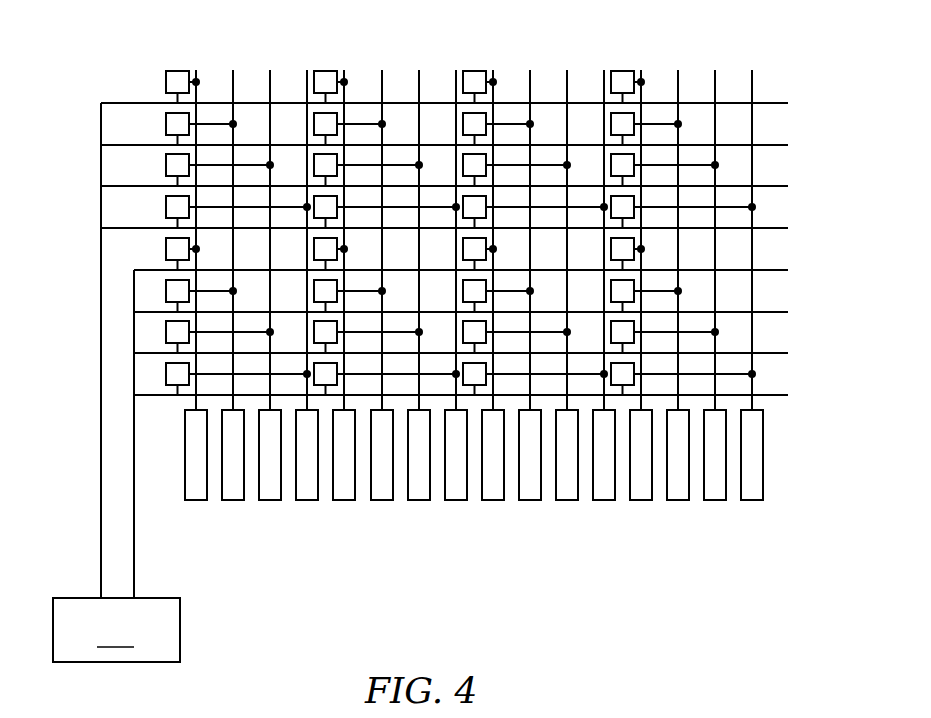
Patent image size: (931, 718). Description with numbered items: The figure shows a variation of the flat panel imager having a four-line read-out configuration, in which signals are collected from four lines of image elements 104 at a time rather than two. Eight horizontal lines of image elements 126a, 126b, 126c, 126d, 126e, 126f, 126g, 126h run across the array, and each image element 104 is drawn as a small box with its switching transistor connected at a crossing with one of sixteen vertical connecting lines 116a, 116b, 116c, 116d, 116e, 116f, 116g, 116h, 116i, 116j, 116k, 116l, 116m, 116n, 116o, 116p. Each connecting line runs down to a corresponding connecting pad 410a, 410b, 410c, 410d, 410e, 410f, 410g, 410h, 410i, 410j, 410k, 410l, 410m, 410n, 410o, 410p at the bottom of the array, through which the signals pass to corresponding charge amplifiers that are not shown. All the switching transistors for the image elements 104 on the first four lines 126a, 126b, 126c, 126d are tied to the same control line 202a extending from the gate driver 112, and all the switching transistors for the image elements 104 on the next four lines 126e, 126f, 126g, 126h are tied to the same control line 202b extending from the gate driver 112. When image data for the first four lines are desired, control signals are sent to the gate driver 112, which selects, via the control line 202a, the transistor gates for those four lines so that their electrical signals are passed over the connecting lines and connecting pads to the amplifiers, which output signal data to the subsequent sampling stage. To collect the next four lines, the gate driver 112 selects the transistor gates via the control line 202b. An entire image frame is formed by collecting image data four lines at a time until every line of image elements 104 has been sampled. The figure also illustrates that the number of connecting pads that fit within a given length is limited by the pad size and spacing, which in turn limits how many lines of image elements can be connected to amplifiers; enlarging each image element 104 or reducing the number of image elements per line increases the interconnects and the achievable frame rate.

The image element 104 is at (170, 72).
The gate driver 112 is at (116, 630).
The control line 202a is at (100, 448).
The control line 202b is at (134, 525).
The connecting line 116a is at (194, 206).
The connecting line 116b is at (342, 205).
The connecting line 116c is at (491, 206).
The connecting line 116d is at (639, 205).
The connecting line 116e is at (231, 206).
The connecting line 116f is at (380, 206).
The connecting line 116g is at (528, 205).
The connecting line 116h is at (676, 205).
The connecting line 116i is at (267, 208).
The connecting line 116j is at (416, 208).
The connecting line 116k is at (565, 206).
The connecting line 116l is at (712, 208).
The connecting line 116m is at (306, 202).
The connecting line 116n is at (454, 205).
The connecting line 116o is at (602, 206).
The connecting line 116p is at (750, 205).
The line of image elements 126a is at (787, 91).
The line of image elements 126b is at (787, 133).
The line of image elements 126c is at (787, 174).
The line of image elements 126d is at (787, 216).
The line of image elements 126e is at (787, 258).
The line of image elements 126f is at (787, 300).
The line of image elements 126g is at (787, 341).
The line of image elements 126h is at (787, 383).
The connecting pad 410a is at (192, 480).
The connecting pad 410b is at (340, 480).
The connecting pad 410c is at (489, 480).
The connecting pad 410d is at (637, 480).
The connecting pad 410e is at (229, 480).
The connecting pad 410f is at (378, 480).
The connecting pad 410g is at (526, 480).
The connecting pad 410h is at (674, 480).
The connecting pad 410i is at (265, 480).
The connecting pad 410j is at (414, 480).
The connecting pad 410k is at (563, 480).
The connecting pad 410l is at (710, 480).
The connecting pad 410m is at (304, 480).
The connecting pad 410n is at (452, 480).
The connecting pad 410o is at (600, 480).
The connecting pad 410p is at (748, 480).